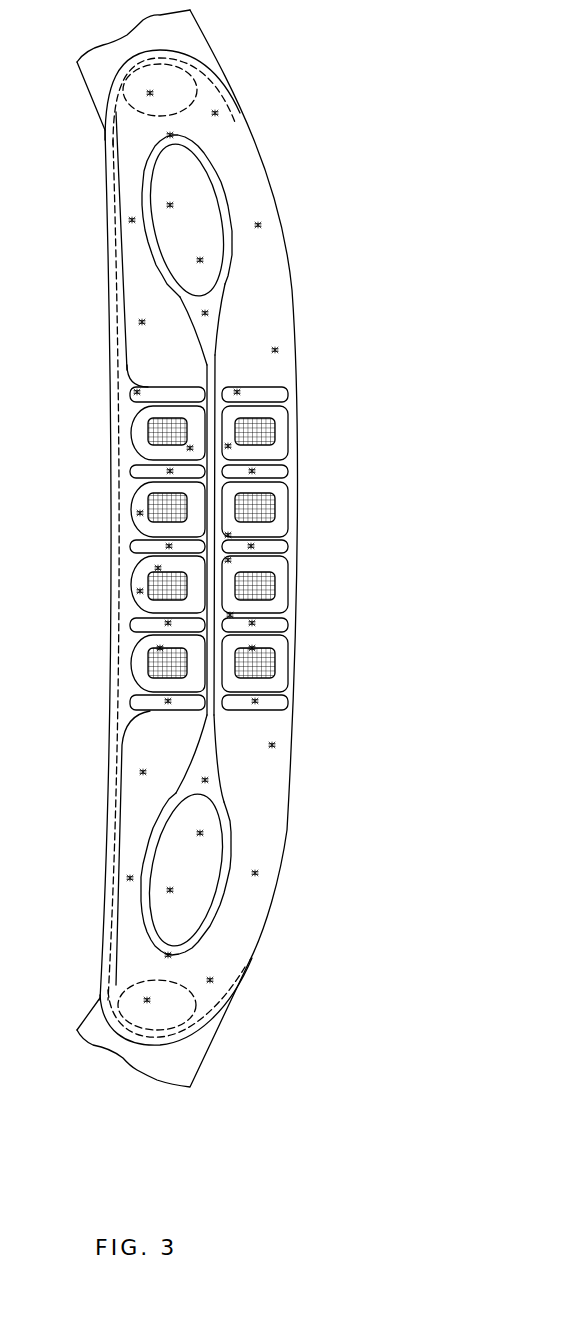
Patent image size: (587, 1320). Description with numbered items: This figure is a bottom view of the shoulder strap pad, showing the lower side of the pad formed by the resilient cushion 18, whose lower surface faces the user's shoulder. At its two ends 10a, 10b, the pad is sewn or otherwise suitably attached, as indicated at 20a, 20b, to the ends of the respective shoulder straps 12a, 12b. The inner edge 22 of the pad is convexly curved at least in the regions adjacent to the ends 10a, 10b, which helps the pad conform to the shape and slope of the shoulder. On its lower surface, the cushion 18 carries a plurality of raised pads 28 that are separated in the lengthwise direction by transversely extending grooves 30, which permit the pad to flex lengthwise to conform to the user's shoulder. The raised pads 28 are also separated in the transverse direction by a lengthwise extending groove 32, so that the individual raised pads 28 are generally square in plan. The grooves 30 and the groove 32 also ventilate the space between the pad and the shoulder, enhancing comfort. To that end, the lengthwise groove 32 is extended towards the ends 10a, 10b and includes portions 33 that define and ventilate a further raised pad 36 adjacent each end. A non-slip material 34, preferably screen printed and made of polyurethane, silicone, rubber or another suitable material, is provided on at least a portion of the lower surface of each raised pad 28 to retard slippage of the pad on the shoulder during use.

The resilient cushion 18 is at (305, 322).
The inner edge 22 is at (287, 247).
The shoulder strap 12a is at (207, 1057).
The shoulder strap 12b is at (198, 40).
The end of pad 10a is at (213, 993).
The end of pad 10b is at (208, 100).
The attachment 20a is at (133, 993).
The attachment 20b is at (132, 105).
The raised pads 28 is at (147, 568).
The transversely extending grooves 30 is at (133, 470).
The lengthwise extending groove 32 is at (210, 428).
The portions of lengthwise groove 33 is at (230, 280).
The non-slip material 34 is at (155, 432).
The further raised pad 36 is at (202, 225).